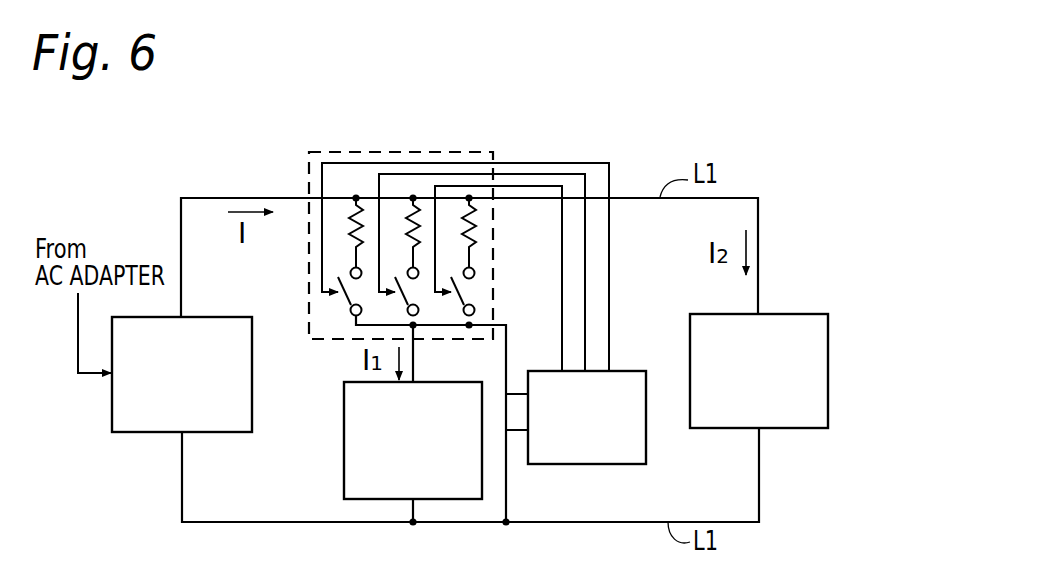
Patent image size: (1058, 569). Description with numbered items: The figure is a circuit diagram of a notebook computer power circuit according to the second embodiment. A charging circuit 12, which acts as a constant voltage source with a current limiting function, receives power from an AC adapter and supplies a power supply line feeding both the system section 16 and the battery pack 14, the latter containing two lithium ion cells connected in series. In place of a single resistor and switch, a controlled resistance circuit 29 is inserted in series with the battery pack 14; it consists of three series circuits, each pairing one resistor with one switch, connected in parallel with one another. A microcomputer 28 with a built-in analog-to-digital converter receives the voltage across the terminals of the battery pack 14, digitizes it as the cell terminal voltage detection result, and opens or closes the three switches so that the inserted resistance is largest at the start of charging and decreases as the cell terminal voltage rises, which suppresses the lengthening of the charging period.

The charging circuit 12 is at (133, 432).
The battery pack 14 is at (344, 456).
The system section 16 is at (726, 428).
The microcomputer 28 is at (547, 464).
The controlled resistance circuit 29 is at (433, 152).